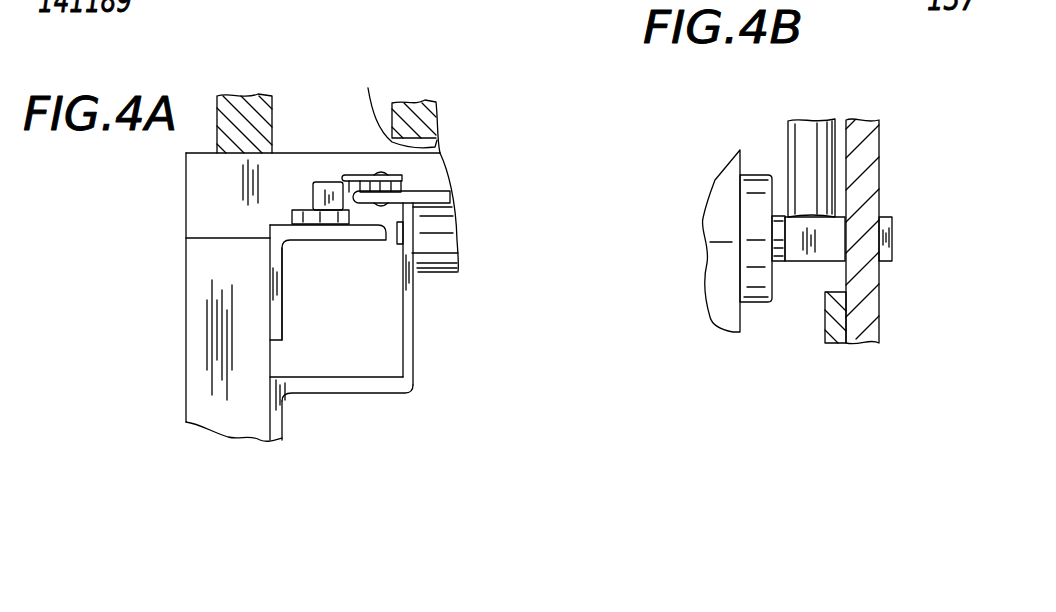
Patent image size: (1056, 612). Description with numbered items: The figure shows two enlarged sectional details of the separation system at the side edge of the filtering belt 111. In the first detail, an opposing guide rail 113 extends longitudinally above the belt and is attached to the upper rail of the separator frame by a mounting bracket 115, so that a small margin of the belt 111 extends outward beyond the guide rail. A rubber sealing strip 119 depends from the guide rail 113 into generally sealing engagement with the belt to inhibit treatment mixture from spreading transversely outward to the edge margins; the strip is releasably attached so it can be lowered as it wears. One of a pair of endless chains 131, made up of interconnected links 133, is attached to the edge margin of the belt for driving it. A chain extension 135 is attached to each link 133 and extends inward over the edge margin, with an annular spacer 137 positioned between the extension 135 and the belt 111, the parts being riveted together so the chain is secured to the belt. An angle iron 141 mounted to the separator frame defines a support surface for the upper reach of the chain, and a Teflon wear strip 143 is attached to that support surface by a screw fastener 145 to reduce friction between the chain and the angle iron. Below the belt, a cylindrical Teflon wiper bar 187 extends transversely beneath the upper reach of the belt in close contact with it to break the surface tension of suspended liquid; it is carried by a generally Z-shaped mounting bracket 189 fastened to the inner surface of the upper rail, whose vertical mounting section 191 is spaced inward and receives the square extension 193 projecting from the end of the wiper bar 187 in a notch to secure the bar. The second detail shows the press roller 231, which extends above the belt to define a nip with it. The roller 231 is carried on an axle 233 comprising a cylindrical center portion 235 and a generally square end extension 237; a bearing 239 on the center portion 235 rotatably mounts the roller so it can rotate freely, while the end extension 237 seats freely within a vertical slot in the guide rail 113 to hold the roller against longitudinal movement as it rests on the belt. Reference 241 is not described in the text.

In FIG. 4A, the filtering belt 111 is at (437, 197).
In FIG. 4A, the guide rails 113 is at (392, 105).
In FIG. 4B, the guide rails 113 is at (883, 188).
In FIG. 4A, the mounting brackets 115 is at (277, 103).
In FIG. 4A, the rubber sealing strips 119 is at (368, 88).
In FIG. 4B, the rubber sealing strips 119 is at (826, 318).
In FIG. 4A, the endless chains 131 is at (316, 182).
In FIG. 4A, the links 133 is at (313, 195).
In FIG. 4A, the chain extensions 135 is at (352, 175).
In FIG. 4A, the annular spacer 137 is at (440, 160).
In FIG. 4A, the angle irons 141 is at (285, 288).
In FIG. 4A, the Teflon wear strips 143 is at (292, 218).
In FIG. 4A, the screw fasteners 145 is at (313, 242).
In FIG. 4A, the wiper bars 187 is at (450, 272).
In FIG. 4A, the mounting brackets 189 is at (362, 393).
In FIG. 4A, the vertical mounting sections 191 is at (418, 343).
In FIG. 4A, the extensions 193 is at (392, 388).
In FIG. 4B, the press roller 231 is at (715, 180).
In FIG. 4B, the axle 233 is at (782, 205).
In FIG. 4B, the cylindrical center portion 235 is at (780, 267).
In FIG. 4B, the square end extensions 237 is at (818, 263).
In FIG. 4B, the bearings 239 is at (757, 175).
In FIG. 4B, the retainer 241 is at (833, 123).